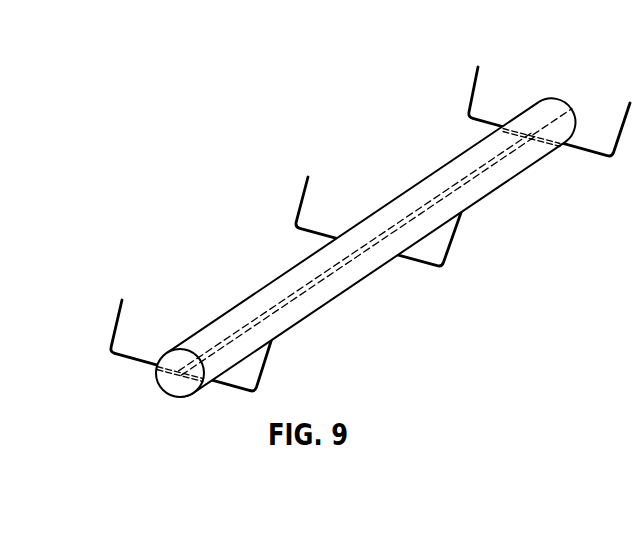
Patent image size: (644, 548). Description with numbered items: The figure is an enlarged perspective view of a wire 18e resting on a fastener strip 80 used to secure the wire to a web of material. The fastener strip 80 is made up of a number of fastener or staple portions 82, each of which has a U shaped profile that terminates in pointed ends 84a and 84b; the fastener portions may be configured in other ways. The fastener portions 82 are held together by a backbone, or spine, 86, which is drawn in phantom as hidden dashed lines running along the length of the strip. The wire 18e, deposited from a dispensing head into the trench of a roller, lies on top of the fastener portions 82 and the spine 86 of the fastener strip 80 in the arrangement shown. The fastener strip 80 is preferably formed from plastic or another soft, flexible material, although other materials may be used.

The wire 18e is at (398, 196).
The fastener strip 80 is at (408, 278).
The fastener portions 82 is at (171, 322).
The pointed end 84a is at (123, 300).
The pointed end 84b is at (274, 334).
The backbone 86 is at (270, 311).